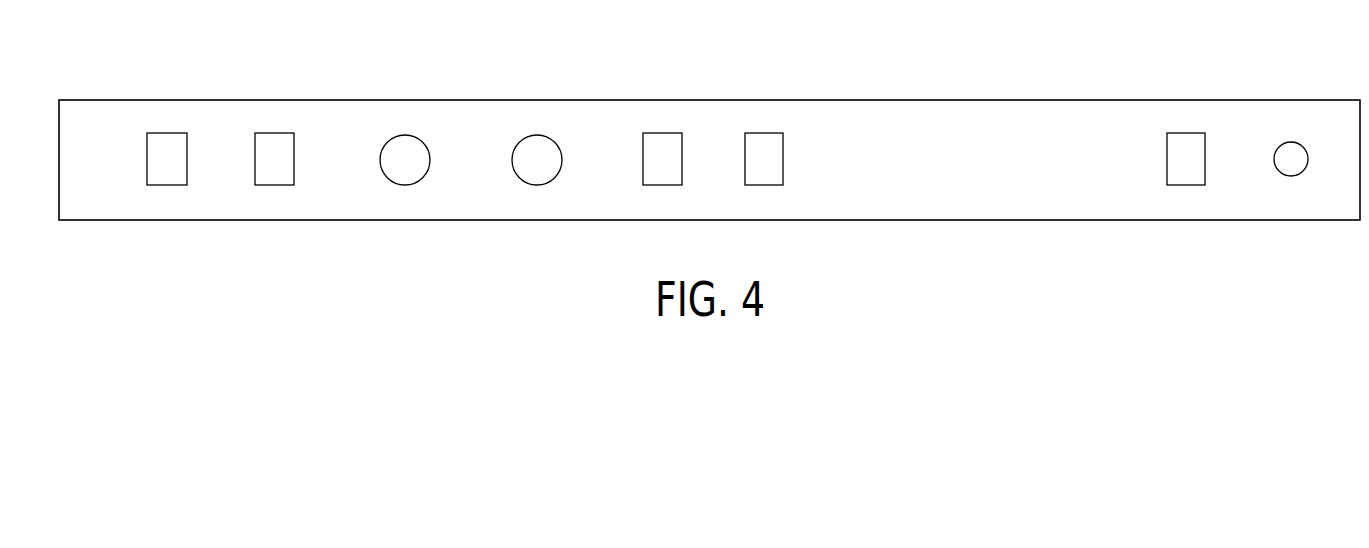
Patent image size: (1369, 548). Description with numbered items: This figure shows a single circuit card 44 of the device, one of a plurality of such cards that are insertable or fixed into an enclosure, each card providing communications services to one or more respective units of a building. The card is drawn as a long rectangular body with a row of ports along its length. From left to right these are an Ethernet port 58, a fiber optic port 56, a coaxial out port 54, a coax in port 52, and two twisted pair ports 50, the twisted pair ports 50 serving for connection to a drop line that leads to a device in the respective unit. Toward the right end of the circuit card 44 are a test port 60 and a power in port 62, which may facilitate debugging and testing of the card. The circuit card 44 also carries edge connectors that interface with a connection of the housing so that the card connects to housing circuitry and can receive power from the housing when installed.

The circuit card 44 is at (1057, 209).
The twisted pair ports 50 is at (663, 133).
The coax in port 52 is at (537, 135).
The coaxial out port 54 is at (405, 135).
The fiber optic port 56 is at (277, 133).
The Ethernet port 58 is at (168, 133).
The test port 60 is at (1187, 133).
The power in port 62 is at (1291, 142).